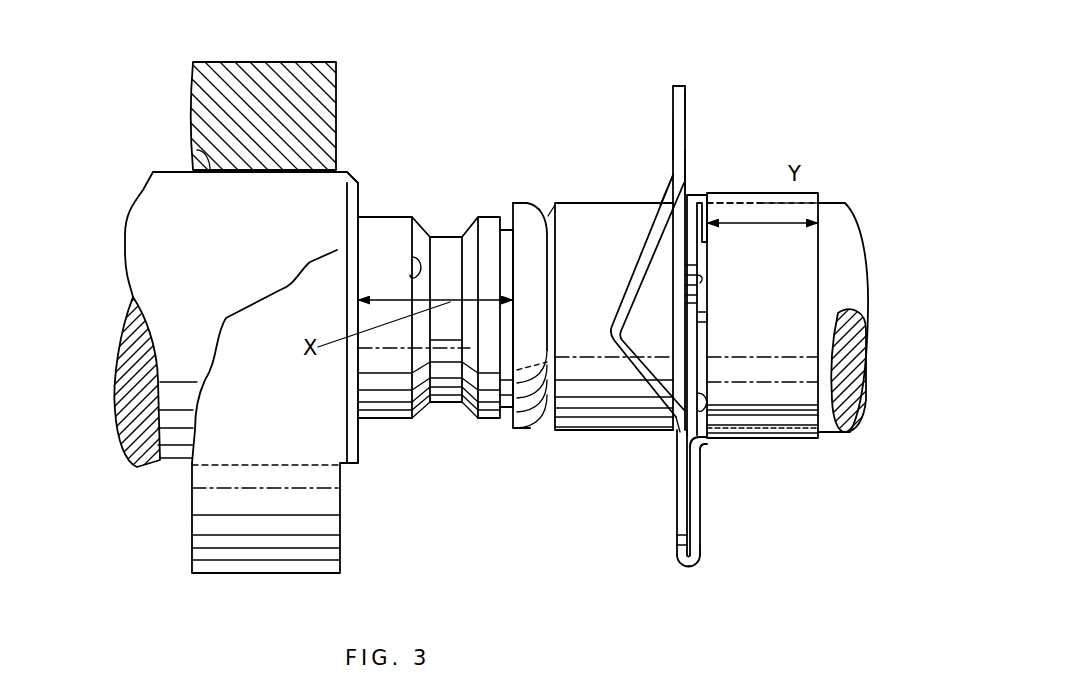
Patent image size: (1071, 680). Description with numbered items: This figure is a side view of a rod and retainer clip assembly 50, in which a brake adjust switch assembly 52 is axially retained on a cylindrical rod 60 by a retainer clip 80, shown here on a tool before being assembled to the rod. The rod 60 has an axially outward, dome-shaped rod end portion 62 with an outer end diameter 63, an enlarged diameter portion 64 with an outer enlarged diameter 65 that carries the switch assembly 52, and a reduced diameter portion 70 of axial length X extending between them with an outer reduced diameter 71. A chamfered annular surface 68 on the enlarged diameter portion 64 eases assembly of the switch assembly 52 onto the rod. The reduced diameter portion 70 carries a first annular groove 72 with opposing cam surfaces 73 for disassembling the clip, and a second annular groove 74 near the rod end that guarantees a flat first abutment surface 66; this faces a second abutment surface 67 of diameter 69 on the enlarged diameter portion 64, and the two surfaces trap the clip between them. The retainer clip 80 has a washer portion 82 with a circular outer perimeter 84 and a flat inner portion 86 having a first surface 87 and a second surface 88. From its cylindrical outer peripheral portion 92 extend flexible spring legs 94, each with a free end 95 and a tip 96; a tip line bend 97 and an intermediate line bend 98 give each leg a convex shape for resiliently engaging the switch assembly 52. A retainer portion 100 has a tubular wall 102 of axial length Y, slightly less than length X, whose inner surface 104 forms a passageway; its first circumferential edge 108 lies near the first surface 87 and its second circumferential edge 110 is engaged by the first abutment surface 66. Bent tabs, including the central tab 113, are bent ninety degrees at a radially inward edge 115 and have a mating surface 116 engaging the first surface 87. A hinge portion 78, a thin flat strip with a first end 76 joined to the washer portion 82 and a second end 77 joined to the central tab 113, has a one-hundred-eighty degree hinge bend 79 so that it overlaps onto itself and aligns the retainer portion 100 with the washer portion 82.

The rod and retainer clip assembly 50 is at (140, 88).
The brake adjust switch assembly 52 is at (236, 72).
The cylindrical rod 60 is at (148, 200).
The rod end portion 62 is at (539, 204).
The outer end diameter 63 is at (525, 220).
The enlarged diameter portion 64 is at (148, 294).
The outer enlarged diameter 65 is at (197, 150).
The first abutment surface 66 is at (515, 428).
The second abutment surface 67 is at (360, 435).
The chamfered annular surface 68 is at (353, 178).
The diameter of second abutment surface 69 is at (360, 437).
The reduced diameter portion 70 is at (412, 214).
The outer reduced diameter 71 is at (378, 215).
The first annular groove 72 is at (445, 235).
The cam surfaces 73 is at (470, 250).
The second annular groove 74 is at (508, 228).
The first end of hinge portion 76 is at (679, 563).
The second end of hinge portion 77 is at (701, 449).
The hinge portion 78 is at (712, 583).
The intermediate hinge bend 79 is at (697, 568).
The retainer clip 80 is at (687, 130).
The washer portion 82 is at (690, 88).
The outer perimeter 84 is at (676, 85).
The inner portion 86 is at (690, 270).
The first surface 87 is at (699, 280).
The second surface 88 is at (672, 280).
The outer peripheral portion 92 is at (686, 105).
The flexible spring legs 94 is at (659, 195).
The free end 95 is at (687, 435).
The tip 96 is at (667, 182).
The tip line bend 97 is at (686, 172).
The intermediate line bend 98 is at (624, 341).
The retainer portion 100 is at (821, 240).
The tubular wall 102 is at (809, 433).
The inner surface 104 is at (793, 215).
The first circumferential edge 108 is at (750, 408).
The second circumferential edge 110 is at (822, 280).
The central tab 113 is at (703, 567).
The radially inward edge 115 is at (700, 446).
The mating surface 116 is at (700, 503).